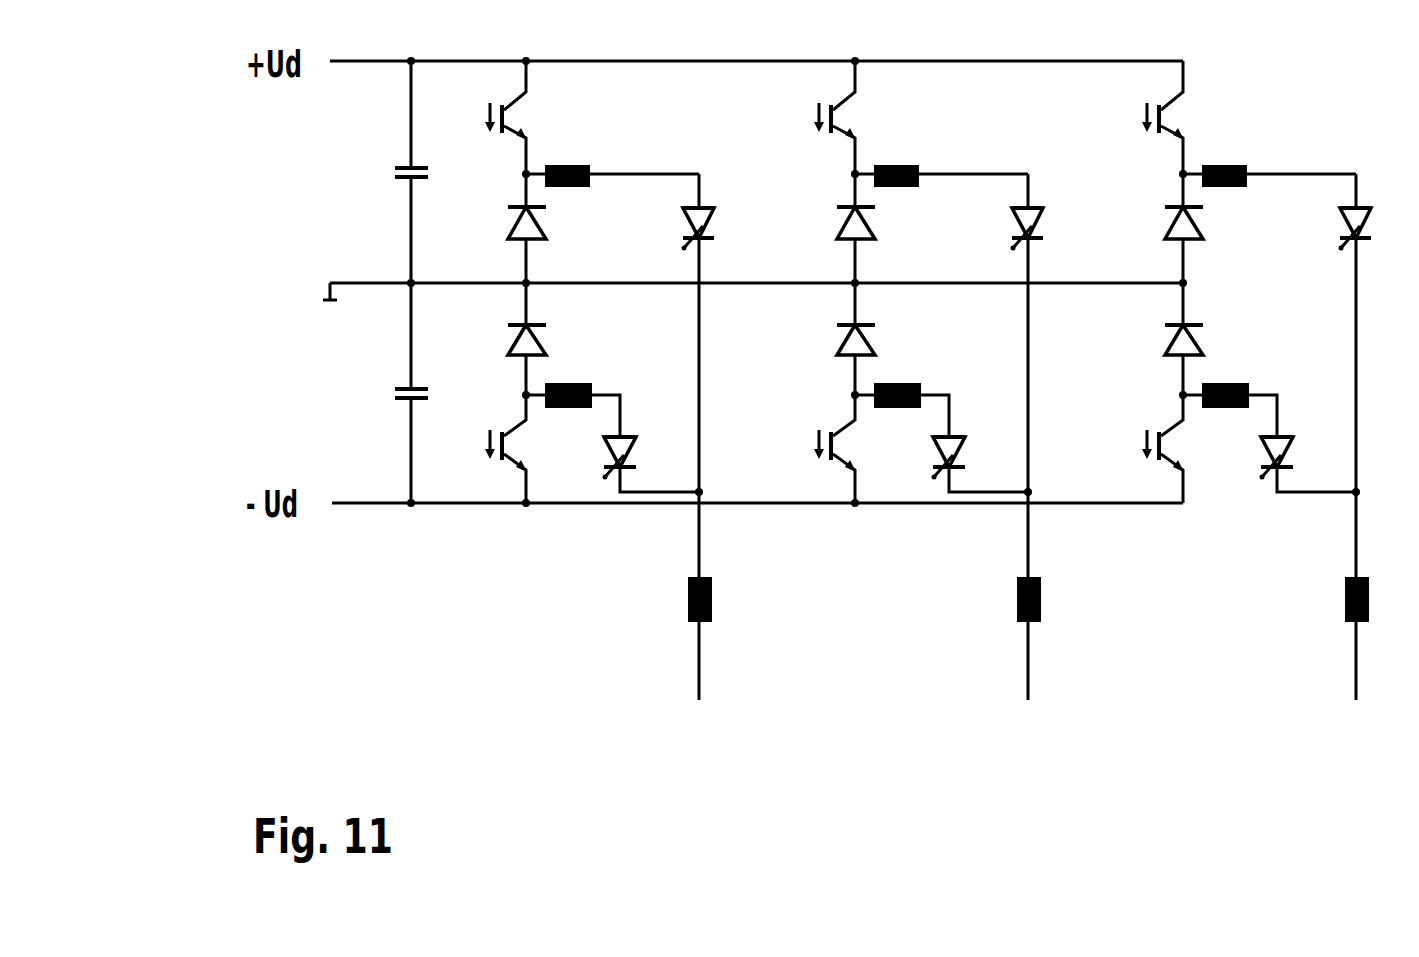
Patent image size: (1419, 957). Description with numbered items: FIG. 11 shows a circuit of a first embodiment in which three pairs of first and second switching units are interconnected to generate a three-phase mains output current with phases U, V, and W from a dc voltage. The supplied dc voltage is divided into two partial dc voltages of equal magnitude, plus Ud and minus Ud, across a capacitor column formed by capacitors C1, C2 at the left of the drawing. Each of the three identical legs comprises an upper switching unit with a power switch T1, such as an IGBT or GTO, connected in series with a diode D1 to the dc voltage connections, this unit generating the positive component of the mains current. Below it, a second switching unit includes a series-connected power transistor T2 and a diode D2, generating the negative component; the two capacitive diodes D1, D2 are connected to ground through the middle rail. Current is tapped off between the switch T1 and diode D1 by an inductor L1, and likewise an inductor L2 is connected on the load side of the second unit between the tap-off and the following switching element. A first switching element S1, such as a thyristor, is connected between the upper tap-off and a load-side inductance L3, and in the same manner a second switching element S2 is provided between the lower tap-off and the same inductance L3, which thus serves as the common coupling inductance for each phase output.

The power switch T1 is at (812, 117).
The power transistor T2 is at (812, 449).
The diode D1 is at (831, 228).
The diode D2 is at (830, 339).
The inductor L1 is at (941, 154).
The inductor L2 is at (901, 417).
The inductance L3 is at (1050, 500).
The first switching element S1 is at (1002, 237).
The second switching element S2 is at (980, 462).
The upper DC link capacitor C1 is at (386, 172).
The lower DC link capacitor C2 is at (386, 393).